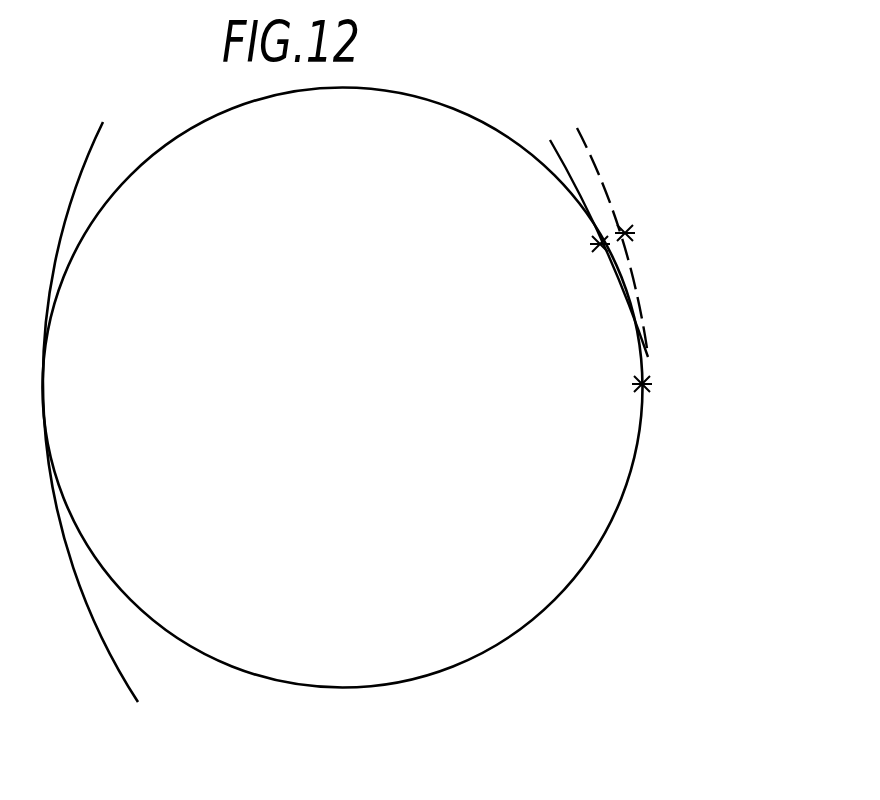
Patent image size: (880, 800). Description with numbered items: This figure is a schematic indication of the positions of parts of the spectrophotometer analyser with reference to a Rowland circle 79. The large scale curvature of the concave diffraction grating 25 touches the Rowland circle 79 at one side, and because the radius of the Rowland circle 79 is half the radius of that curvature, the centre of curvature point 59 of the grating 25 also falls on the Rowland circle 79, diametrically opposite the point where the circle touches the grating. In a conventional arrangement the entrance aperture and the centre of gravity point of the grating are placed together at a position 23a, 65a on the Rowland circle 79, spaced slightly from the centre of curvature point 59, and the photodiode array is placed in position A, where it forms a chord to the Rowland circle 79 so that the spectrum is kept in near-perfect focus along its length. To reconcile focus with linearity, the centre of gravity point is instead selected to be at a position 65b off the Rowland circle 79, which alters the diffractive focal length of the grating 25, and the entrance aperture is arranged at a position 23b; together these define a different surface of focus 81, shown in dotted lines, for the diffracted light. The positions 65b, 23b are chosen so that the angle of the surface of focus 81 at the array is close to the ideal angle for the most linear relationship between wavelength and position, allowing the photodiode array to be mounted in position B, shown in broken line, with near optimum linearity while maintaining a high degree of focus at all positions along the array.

The Rowland circle 79 is at (572, 584).
The grating 25 is at (113, 658).
The centre of curvature point 59 is at (652, 386).
The surface of focus 81 is at (621, 214).
The position of entrance aperture 23a is at (520, 268).
The position of centre of gravity point 65a is at (600, 245).
The position of entrance aperture 23b is at (701, 233).
The position of centre of gravity point 65b is at (628, 233).
The position A is at (551, 156).
The position B is at (682, 220).